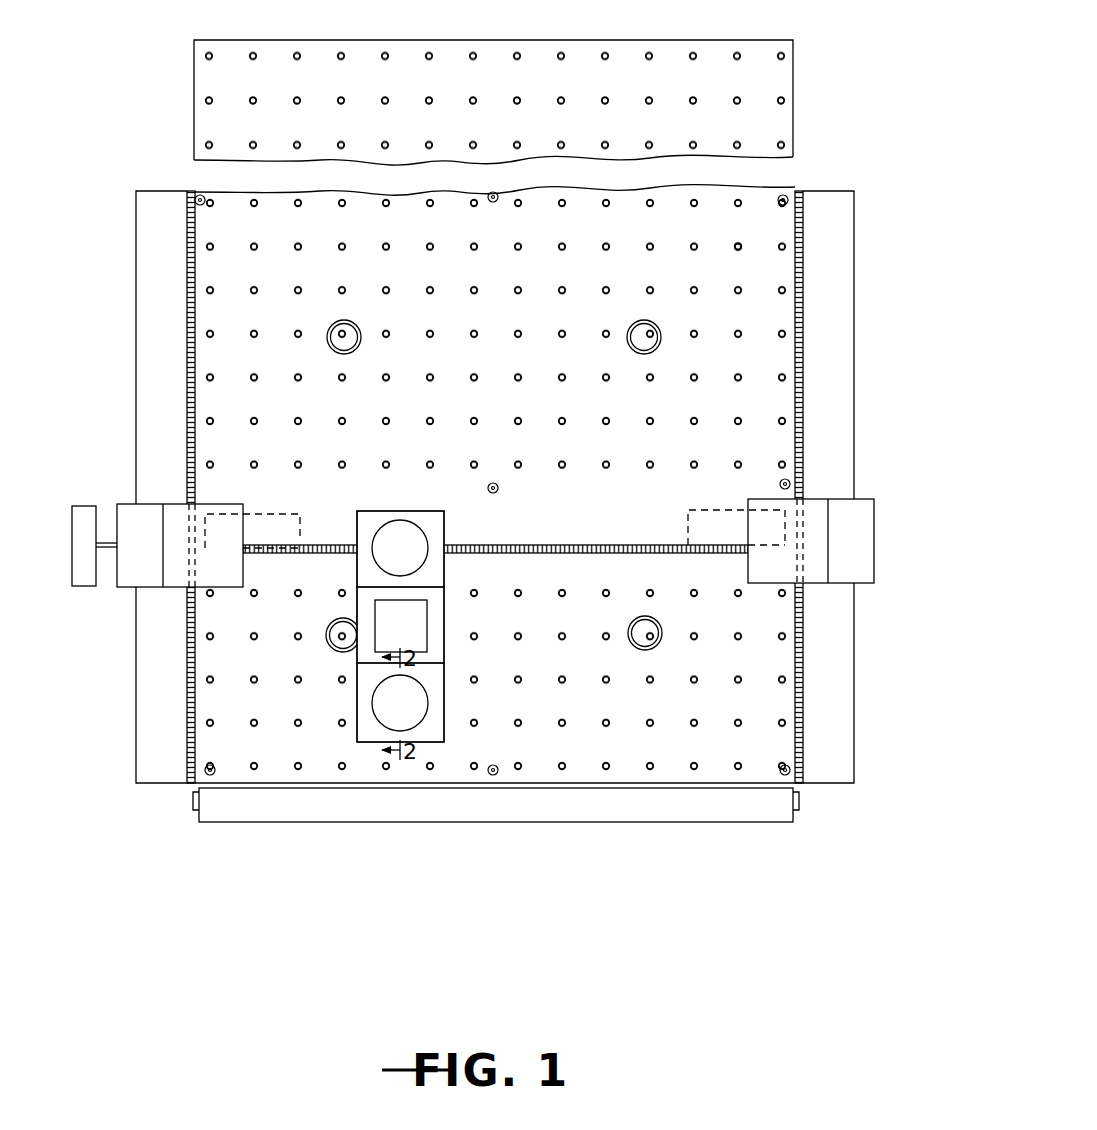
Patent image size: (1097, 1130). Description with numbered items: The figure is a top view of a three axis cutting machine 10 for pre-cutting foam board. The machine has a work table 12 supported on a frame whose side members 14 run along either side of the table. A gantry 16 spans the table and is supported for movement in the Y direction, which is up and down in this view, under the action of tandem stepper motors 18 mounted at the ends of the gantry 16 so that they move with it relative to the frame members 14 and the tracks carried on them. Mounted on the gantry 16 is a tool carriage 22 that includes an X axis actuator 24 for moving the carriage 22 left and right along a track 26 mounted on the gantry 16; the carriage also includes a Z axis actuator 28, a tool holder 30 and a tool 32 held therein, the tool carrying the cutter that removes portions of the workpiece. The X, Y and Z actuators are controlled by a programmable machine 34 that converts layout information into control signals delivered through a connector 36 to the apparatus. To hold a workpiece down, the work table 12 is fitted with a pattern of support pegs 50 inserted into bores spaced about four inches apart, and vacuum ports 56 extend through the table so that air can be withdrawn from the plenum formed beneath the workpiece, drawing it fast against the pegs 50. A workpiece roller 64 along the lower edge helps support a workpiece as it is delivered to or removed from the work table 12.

The cutting machine 10 is at (198, 840).
The work table 12 is at (793, 60).
The side members 14 is at (136, 310).
The gantry 16 is at (737, 497).
The tandem stepper motors 18 is at (303, 535).
The tool carriage 22 is at (354, 741).
The X axis actuator 24 is at (444, 532).
The track 26 is at (620, 553).
The middle carriage block 28 is at (447, 640).
The tool holder 30 is at (357, 700).
The tool 32 is at (423, 722).
The programmable machine 34 is at (85, 506).
The connector 36 is at (110, 548).
The support pegs 50 is at (740, 245).
The vacuum ports 56 is at (346, 320).
The workpiece roller 64 is at (748, 822).